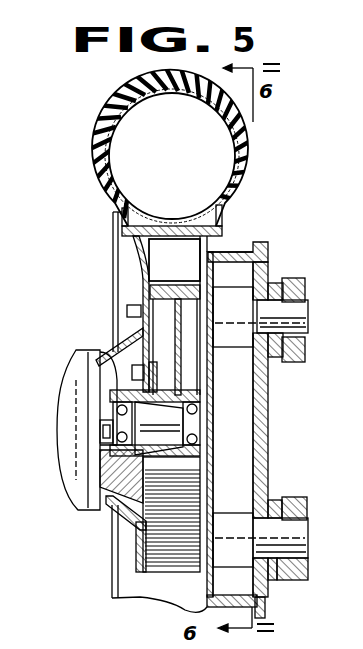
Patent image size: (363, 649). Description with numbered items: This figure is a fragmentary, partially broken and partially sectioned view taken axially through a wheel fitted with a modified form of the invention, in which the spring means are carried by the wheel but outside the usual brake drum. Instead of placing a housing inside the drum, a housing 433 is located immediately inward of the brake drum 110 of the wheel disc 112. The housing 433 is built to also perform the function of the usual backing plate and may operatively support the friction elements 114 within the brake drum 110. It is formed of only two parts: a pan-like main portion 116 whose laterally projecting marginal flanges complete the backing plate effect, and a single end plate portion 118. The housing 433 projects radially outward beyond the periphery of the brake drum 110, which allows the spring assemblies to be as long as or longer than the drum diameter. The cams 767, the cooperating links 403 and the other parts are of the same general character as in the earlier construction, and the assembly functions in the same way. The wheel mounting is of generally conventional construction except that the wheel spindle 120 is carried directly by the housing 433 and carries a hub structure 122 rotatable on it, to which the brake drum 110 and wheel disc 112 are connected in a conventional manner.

The brake drum 110 is at (172, 300).
The wheel disc 112 is at (142, 270).
The friction elements 114 is at (176, 330).
The main portion 116 is at (248, 256).
The end plate portion 118 is at (264, 404).
The wheel spindle 120 is at (188, 424).
The hub structure 122 is at (110, 382).
The cooperating links 403 is at (294, 283).
The housing 433 is at (227, 250).
The cams 767 is at (259, 427).